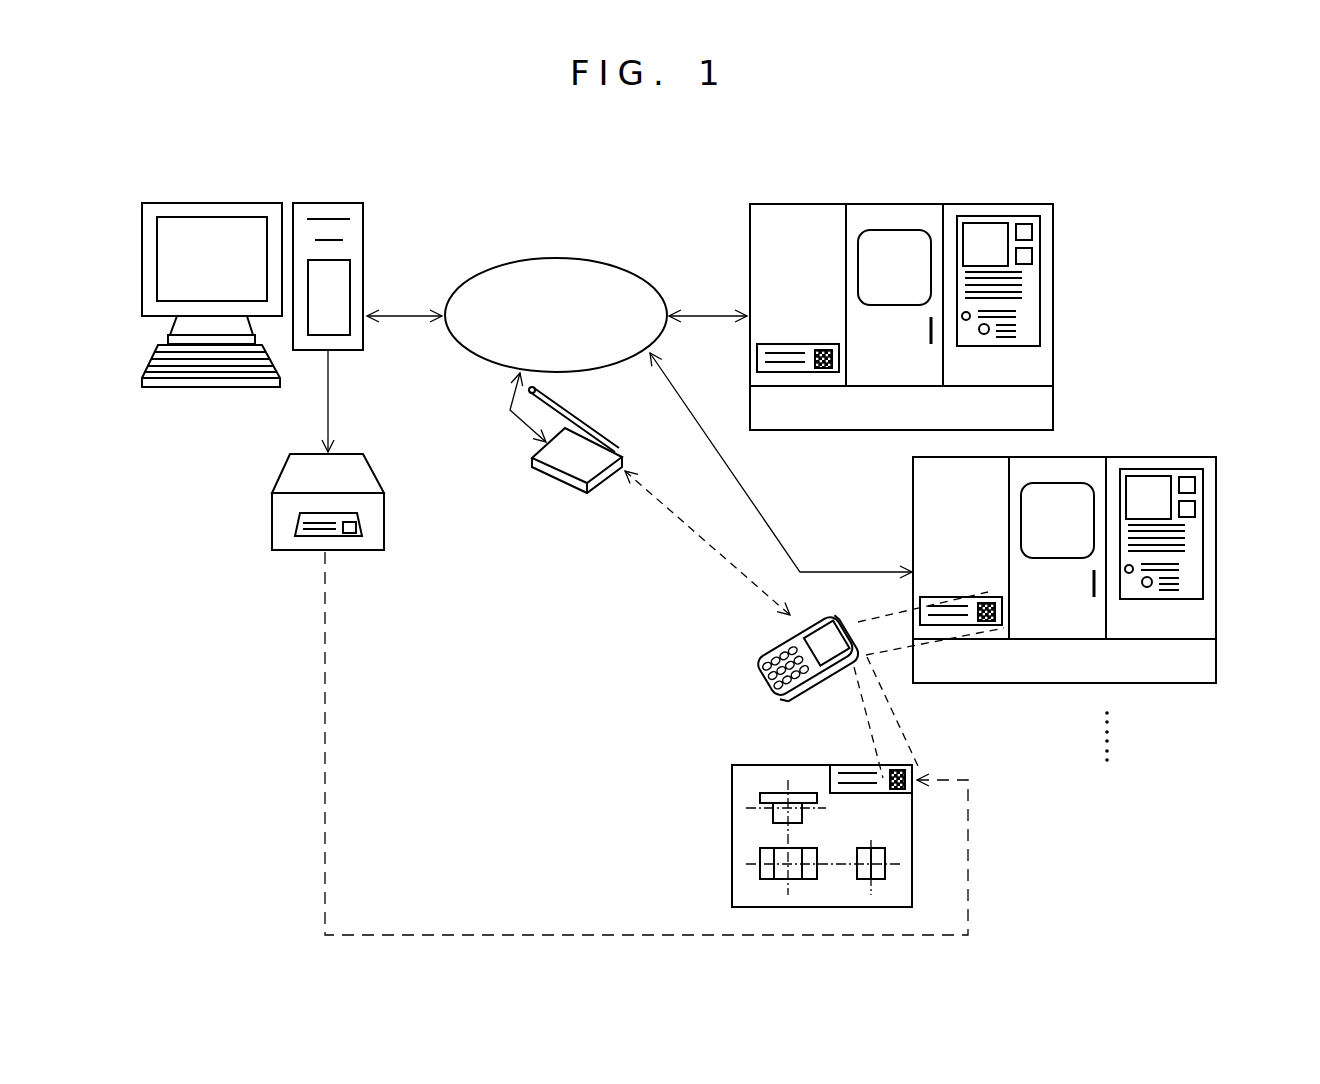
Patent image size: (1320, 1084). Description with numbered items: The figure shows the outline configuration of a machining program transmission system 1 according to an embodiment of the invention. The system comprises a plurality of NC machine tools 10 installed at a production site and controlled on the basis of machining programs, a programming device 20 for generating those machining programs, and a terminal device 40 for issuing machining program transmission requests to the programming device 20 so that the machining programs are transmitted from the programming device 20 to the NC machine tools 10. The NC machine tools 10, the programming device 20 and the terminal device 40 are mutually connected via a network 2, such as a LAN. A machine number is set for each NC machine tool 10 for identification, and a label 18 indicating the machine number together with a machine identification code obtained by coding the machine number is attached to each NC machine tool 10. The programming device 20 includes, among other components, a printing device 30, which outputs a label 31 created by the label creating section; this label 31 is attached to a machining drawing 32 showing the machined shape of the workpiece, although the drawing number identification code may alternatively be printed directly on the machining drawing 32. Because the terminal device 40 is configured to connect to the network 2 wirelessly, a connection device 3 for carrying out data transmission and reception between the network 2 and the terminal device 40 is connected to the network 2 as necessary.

The machining program transmission system 1 is at (1086, 878).
The network 2 is at (487, 364).
The connection device 3 is at (562, 481).
The NC machine tool 10 is at (1082, 327).
The label 18 is at (771, 344).
The programming device 20 is at (187, 405).
The printing device 30 is at (278, 517).
The label 31 is at (341, 539).
The machining drawing 32 is at (737, 832).
The terminal device 40 is at (743, 678).